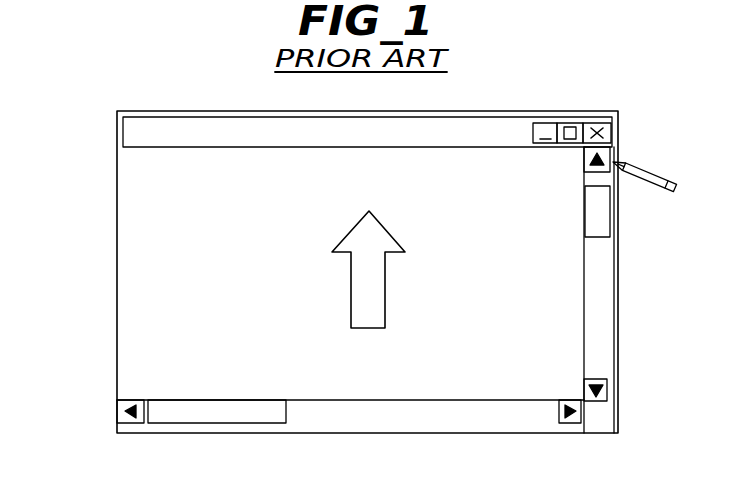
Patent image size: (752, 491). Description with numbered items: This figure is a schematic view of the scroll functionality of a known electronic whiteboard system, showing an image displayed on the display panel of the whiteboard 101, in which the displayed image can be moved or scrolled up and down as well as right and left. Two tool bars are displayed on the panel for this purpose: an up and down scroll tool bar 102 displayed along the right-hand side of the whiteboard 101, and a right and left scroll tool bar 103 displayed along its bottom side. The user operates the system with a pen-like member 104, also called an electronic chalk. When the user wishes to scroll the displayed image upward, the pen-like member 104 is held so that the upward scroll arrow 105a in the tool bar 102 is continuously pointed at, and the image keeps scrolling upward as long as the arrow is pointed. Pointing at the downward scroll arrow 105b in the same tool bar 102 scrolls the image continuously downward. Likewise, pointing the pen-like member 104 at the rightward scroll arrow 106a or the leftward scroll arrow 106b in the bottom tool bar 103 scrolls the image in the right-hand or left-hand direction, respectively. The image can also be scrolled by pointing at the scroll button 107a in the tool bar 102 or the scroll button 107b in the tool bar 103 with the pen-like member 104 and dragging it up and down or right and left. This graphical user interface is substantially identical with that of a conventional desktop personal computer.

The whiteboard 101 is at (117, 238).
The up and down scroll tool bar 102 is at (625, 289).
The right and left scroll tool bar 103 is at (355, 439).
The pen-like member 104 is at (655, 173).
The upward scroll arrow 105a is at (606, 154).
The downward scroll arrow 105b is at (600, 390).
The rightward scroll arrow 106a is at (573, 425).
The leftward scroll arrow 106b is at (124, 423).
The scroll button 107a is at (600, 208).
The scroll button 107b is at (215, 417).